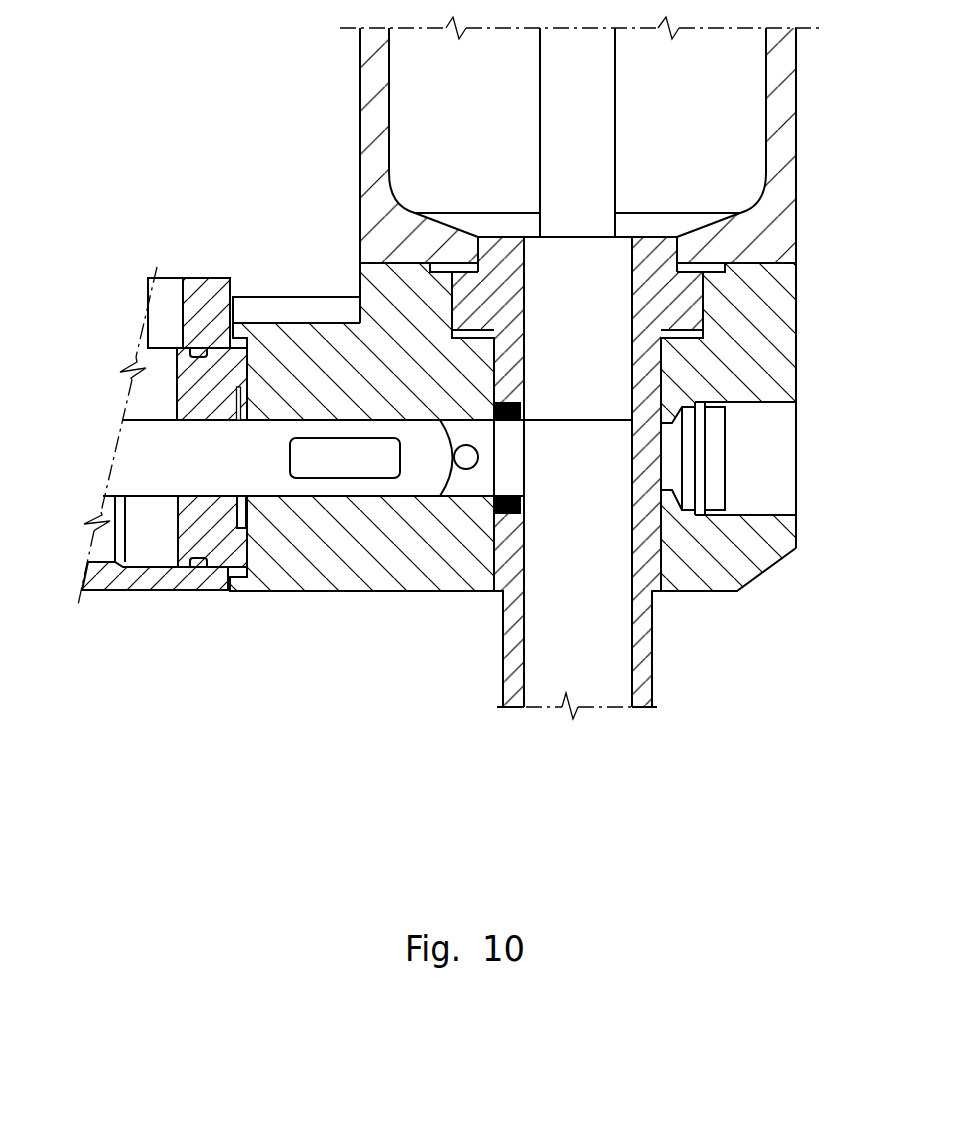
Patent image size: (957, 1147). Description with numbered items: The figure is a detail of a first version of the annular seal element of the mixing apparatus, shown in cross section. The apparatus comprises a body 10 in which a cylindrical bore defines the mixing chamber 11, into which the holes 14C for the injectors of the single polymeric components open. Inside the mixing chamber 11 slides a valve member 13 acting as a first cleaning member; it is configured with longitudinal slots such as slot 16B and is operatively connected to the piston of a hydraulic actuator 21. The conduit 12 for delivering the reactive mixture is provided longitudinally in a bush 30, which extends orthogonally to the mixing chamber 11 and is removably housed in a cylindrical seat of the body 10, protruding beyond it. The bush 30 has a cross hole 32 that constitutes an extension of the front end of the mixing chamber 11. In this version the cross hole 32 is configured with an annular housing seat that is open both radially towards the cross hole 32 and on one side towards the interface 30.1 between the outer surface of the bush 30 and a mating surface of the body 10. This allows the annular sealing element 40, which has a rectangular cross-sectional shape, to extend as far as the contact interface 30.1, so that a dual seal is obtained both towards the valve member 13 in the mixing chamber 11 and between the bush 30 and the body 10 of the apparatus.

The body 10 is at (298, 565).
The mixing chamber 11 is at (477, 483).
The conduit 12 is at (527, 547).
The valve member 13 is at (158, 458).
The holes for the injectors 14C is at (448, 448).
The longitudinal slot 16B is at (367, 467).
The hydraulic actuator 21 is at (132, 580).
The bush 30 is at (642, 655).
The interface 30.1 is at (497, 543).
The cross hole 32 is at (508, 454).
The annular sealing element 40 is at (523, 397).